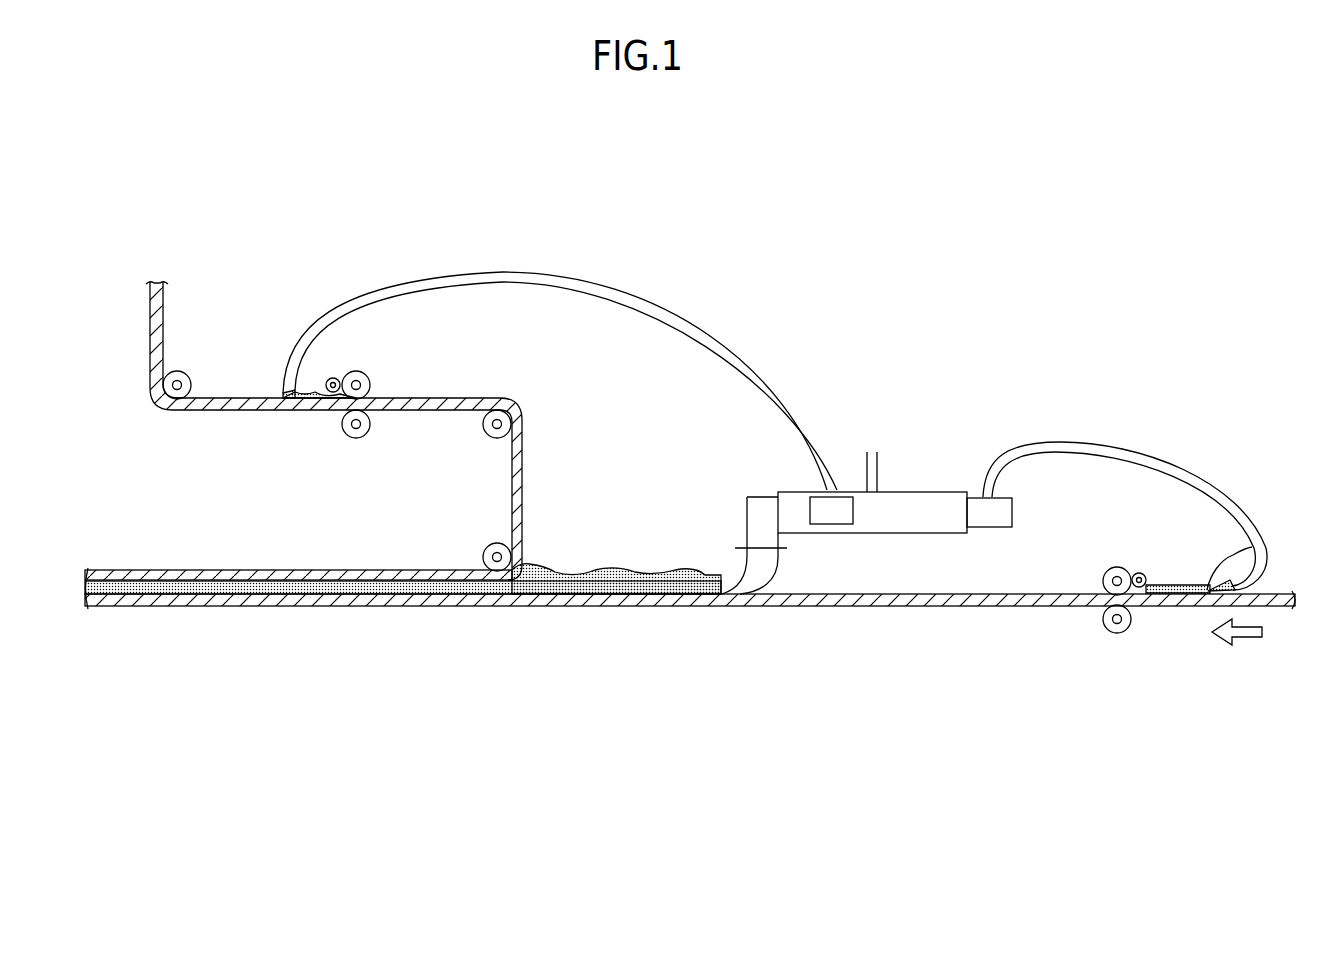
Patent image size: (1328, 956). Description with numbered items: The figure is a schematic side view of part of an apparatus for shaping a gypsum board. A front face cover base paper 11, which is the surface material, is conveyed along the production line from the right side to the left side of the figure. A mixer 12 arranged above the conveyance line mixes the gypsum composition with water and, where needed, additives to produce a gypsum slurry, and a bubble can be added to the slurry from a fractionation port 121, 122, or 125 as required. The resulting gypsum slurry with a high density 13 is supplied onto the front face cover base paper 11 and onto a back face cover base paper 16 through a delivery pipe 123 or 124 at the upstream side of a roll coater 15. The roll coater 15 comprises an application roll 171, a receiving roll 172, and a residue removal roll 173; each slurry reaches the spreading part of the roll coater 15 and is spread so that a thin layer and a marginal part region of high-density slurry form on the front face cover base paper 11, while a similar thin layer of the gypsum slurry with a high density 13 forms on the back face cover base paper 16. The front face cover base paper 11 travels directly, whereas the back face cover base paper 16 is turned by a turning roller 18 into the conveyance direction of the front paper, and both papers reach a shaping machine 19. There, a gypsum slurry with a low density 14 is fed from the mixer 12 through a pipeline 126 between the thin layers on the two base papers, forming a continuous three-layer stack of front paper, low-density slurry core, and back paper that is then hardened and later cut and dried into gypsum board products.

The front face cover base paper 11 is at (1262, 592).
The mixer 12 is at (885, 492).
The fractionation port 121 is at (847, 503).
The fractionation port 122 is at (975, 498).
The delivery pipe 123 is at (635, 297).
The delivery pipe 124 is at (1135, 447).
The fractionation port 125 is at (760, 507).
The pipeline 126 is at (744, 575).
The gypsum slurry with a high density 13 is at (293, 412).
The gypsum slurry with a low density 14 is at (702, 573).
The roll coater 15 is at (330, 442).
The back face cover base paper 16 is at (163, 297).
The application roll 171 is at (371, 385).
The receiving roll 172 is at (360, 439).
The residue removal roll 173 is at (333, 378).
The turning roller 18 is at (497, 439).
The shaping machine 19 is at (482, 557).